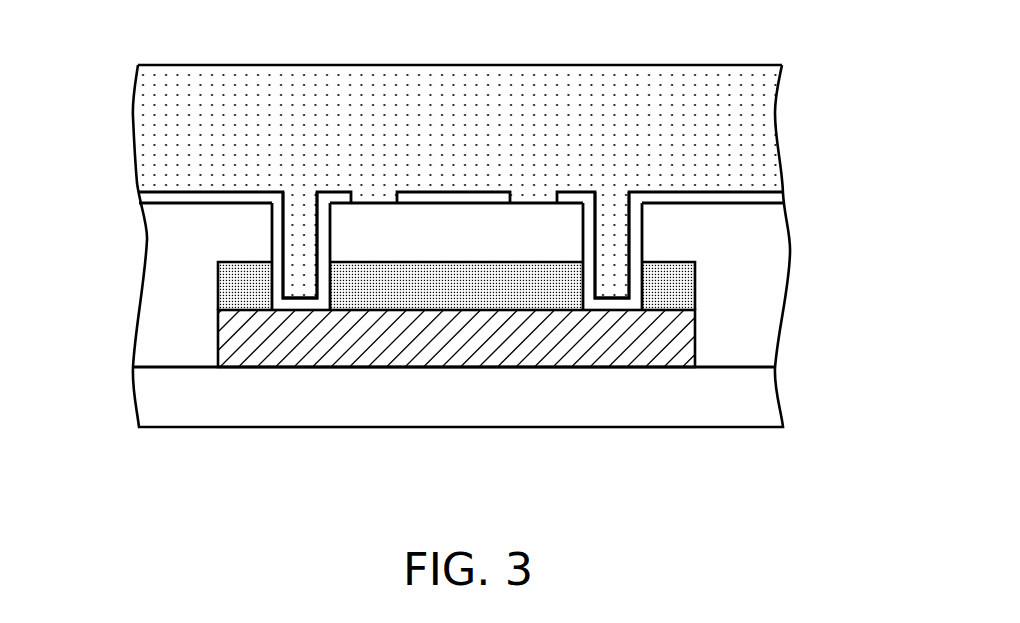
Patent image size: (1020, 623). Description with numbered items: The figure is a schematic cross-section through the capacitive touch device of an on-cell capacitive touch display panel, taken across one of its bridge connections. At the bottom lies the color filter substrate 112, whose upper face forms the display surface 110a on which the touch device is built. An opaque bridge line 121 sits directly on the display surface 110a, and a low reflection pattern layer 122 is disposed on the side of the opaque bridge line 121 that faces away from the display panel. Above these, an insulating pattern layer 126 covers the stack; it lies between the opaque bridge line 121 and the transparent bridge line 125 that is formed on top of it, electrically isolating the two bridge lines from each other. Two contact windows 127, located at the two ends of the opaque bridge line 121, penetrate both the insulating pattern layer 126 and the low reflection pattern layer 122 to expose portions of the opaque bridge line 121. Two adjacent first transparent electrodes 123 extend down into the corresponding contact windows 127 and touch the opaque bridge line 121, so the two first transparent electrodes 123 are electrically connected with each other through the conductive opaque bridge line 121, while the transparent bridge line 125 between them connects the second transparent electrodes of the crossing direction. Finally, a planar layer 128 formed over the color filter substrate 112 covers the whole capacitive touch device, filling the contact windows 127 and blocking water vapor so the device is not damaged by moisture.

The color filter substrate 112 is at (758, 400).
The display surface 110a is at (747, 367).
The opaque bridge line 121 is at (675, 342).
The low reflection pattern layer 122 is at (695, 290).
The insulating pattern layer 126 is at (758, 235).
The first transparent electrodes 123 is at (160, 195).
The transparent bridge line 125 is at (462, 200).
The contact windows 127 is at (300, 225).
The planar layer 128 is at (758, 117).